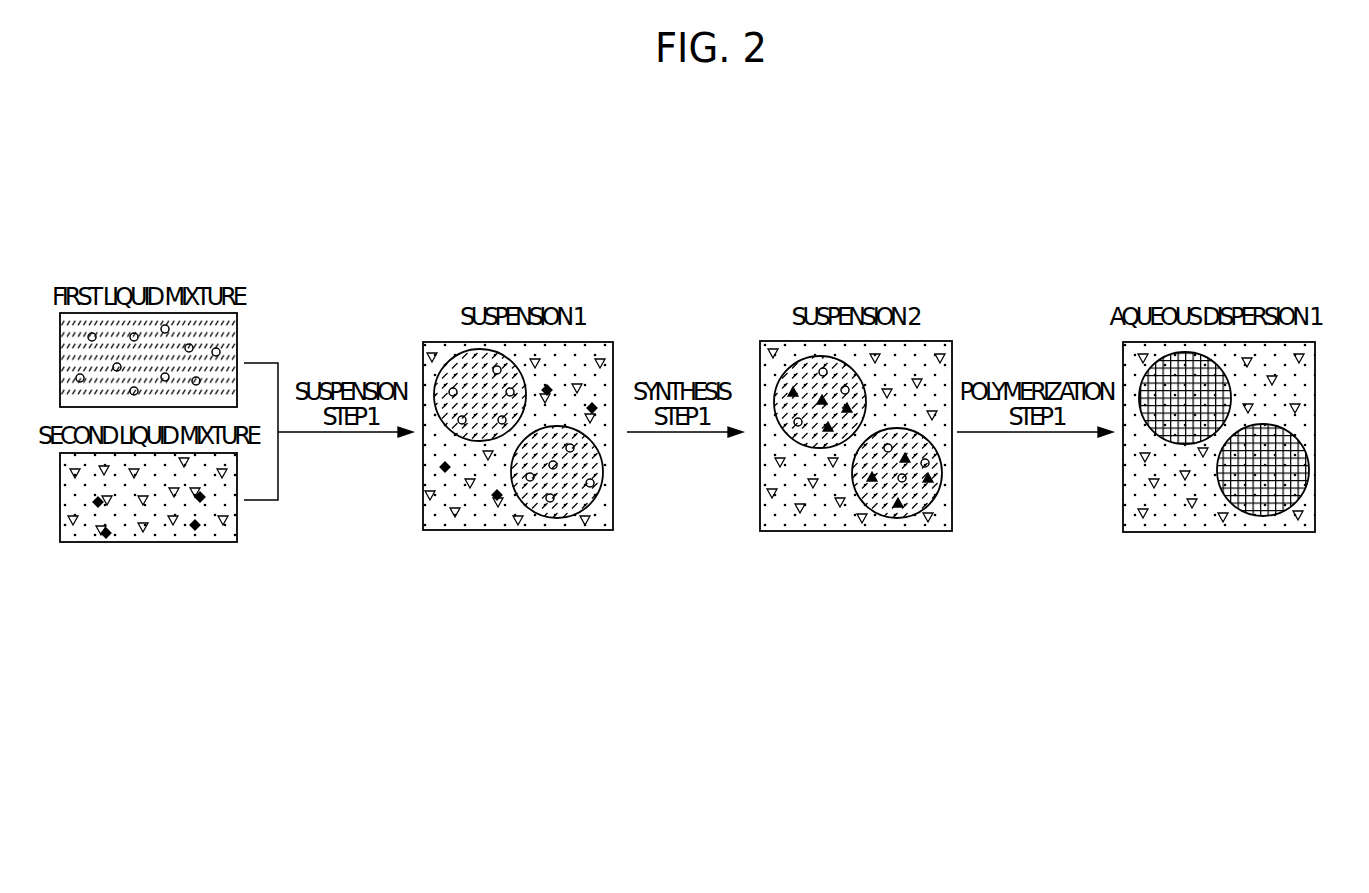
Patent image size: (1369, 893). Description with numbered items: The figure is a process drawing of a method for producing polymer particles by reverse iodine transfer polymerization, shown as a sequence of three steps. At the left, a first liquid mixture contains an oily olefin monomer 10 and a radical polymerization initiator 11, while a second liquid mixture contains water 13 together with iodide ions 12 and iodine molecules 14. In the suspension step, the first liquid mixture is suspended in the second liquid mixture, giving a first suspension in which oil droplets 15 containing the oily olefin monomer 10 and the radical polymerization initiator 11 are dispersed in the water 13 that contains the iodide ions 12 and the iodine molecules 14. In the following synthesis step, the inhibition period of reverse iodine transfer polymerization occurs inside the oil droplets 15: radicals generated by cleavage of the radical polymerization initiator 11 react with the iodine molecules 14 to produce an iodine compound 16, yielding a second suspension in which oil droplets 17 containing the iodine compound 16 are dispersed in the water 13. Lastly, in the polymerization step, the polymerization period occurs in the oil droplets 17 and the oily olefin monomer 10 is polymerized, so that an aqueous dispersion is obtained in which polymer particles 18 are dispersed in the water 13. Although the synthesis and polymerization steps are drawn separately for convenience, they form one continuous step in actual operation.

The oily olefin monomer 10 is at (216, 327).
The radical polymerization initiator 11 is at (218, 351).
The iodide ions 12 is at (232, 521).
The water 13 is at (123, 532).
The iodine molecules 14 is at (200, 530).
The oil droplets 15 is at (605, 430).
The iodine compound 16 is at (785, 380).
The oil droplets 17 is at (865, 435).
The polymer particles 18 is at (1307, 430).